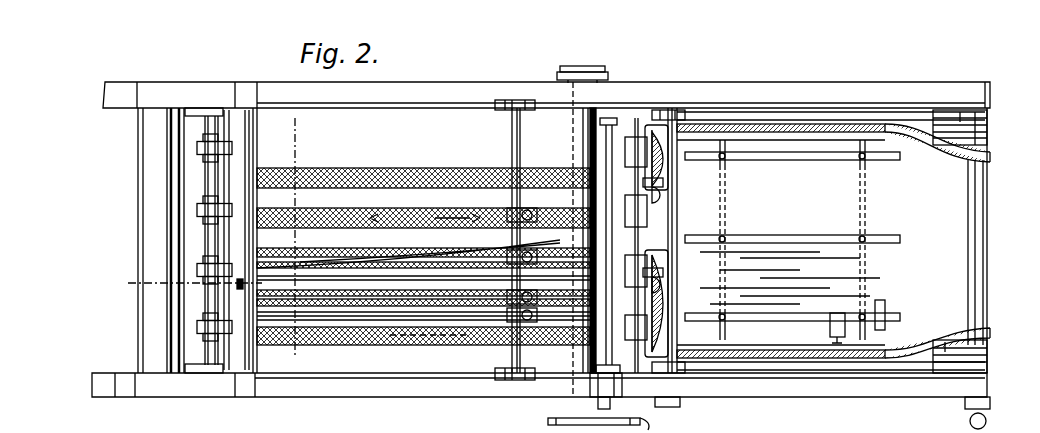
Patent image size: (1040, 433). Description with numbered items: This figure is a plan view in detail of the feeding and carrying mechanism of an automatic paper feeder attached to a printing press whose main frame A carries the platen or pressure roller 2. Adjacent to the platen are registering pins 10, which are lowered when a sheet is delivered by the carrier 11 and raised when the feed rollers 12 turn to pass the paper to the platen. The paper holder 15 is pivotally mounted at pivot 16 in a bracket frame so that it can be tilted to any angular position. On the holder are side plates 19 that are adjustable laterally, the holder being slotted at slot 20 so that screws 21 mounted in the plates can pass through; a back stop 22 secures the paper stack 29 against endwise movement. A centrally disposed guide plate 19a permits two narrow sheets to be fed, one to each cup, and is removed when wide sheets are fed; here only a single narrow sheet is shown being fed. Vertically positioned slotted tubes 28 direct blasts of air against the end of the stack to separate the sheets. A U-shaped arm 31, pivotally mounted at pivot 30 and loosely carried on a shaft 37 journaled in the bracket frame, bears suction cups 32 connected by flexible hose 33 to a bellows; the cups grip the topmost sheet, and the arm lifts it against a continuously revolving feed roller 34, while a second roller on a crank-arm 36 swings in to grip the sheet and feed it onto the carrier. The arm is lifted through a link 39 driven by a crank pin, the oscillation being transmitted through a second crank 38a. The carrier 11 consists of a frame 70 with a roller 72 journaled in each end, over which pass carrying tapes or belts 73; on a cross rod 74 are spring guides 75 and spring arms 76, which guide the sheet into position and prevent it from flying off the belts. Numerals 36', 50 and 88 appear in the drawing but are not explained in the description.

The platen or pressure roller 2 is at (197, 240).
The registering pins 10 is at (200, 150).
The feed rollers 12 is at (202, 212).
The pivot 16 is at (193, 287).
The plate 88 is at (300, 283).
The carrier 11 is at (426, 240).
The frame 70 is at (382, 385).
The main frame A is at (404, 92).
The carrying tapes or belts 73 is at (422, 170).
The spring guides 75 is at (355, 232).
The spring arms 76 is at (432, 290).
The rod 74 is at (520, 240).
The roller 72 is at (573, 134).
The crank-arm 36 is at (637, 251).
The hook 36' is at (653, 425).
The bracket 50 is at (594, 418).
The feed roller 34 is at (630, 245).
The slotted tubes 28 is at (646, 243).
The suction cups 32 is at (660, 195).
The paper holder 15 is at (832, 240).
The U-shaped arm 31 is at (772, 120).
The flexible hose 33 is at (835, 125).
The second crank 38a is at (905, 160).
The pivot 30 is at (960, 245).
The shaft 37 is at (986, 256).
The side plates 19 is at (838, 160).
The central guide plate 19a is at (818, 235).
The slot 20 is at (792, 240).
The screws 21 is at (725, 158).
The paper stack 29 is at (790, 278).
The back stop 22 is at (886, 312).
The link 39 is at (972, 420).